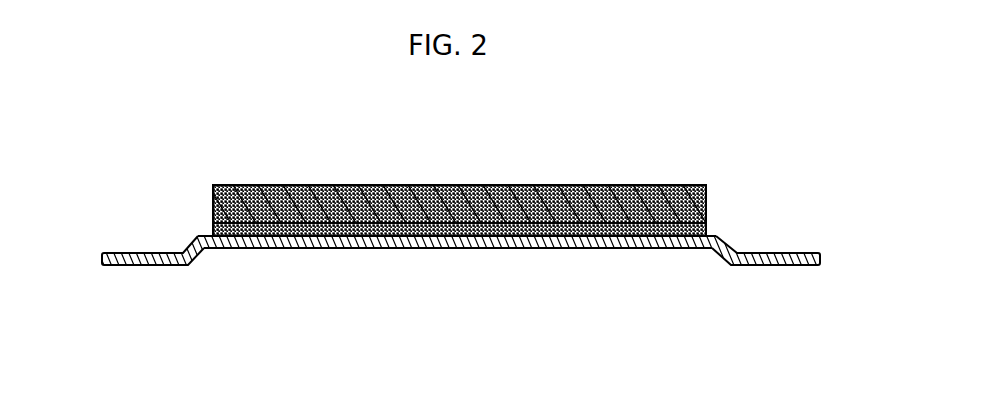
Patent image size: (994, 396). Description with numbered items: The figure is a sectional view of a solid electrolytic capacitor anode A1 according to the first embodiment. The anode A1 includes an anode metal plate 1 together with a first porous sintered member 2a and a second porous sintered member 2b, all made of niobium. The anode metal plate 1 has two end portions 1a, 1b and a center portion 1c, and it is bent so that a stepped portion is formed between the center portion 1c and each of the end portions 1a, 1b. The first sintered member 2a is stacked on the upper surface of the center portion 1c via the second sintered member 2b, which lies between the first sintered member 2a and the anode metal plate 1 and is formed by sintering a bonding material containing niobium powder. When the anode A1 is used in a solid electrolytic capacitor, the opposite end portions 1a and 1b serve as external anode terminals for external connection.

The anode A1 is at (192, 141).
The anode metal plate 1 is at (462, 288).
The end portion 1a is at (150, 267).
The end portion 1b is at (775, 267).
The center portion 1c is at (412, 244).
The first porous sintered member 2a is at (365, 200).
The second porous sintered member 2b is at (325, 238).